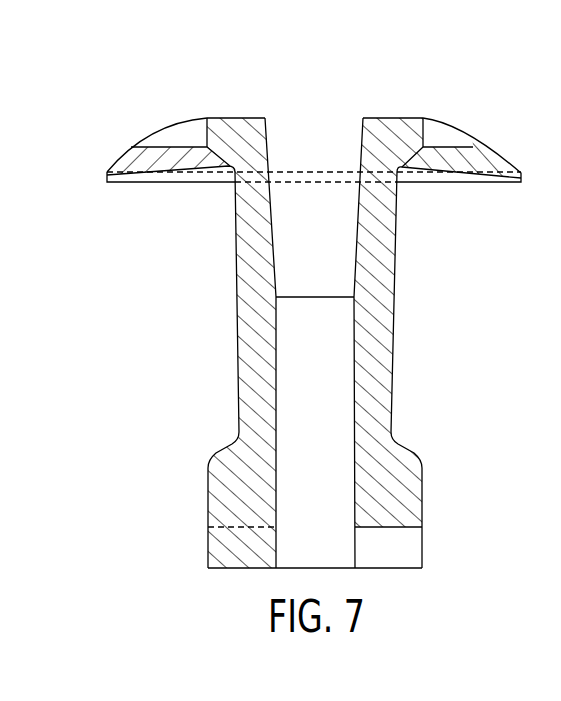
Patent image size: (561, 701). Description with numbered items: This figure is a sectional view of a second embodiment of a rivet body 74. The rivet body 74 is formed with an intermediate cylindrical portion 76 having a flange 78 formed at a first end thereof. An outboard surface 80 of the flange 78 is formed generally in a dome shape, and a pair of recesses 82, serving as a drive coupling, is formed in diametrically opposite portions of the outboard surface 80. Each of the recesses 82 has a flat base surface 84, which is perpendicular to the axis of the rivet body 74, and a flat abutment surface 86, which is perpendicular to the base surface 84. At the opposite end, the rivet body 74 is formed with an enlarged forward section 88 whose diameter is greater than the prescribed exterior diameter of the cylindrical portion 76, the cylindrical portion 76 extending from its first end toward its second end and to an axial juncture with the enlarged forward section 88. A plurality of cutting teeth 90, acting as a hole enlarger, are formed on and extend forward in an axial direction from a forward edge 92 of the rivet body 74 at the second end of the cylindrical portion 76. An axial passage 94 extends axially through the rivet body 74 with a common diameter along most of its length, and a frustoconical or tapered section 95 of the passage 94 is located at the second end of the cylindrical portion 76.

The rivet body 74 is at (326, 332).
The intermediate cylindrical portion 76 is at (393, 337).
The flange 78 is at (372, 107).
The outboard surface 80 is at (512, 162).
The recesses 82 is at (458, 107).
The flat base surface 84 is at (474, 145).
The flat abutment surface 86 is at (424, 133).
The enlarged forward section 88 is at (415, 507).
The cutting teeth 90 is at (410, 568).
The forward edge 92 is at (412, 529).
The axial passage 94 is at (352, 404).
The tapered section 95 is at (266, 134).